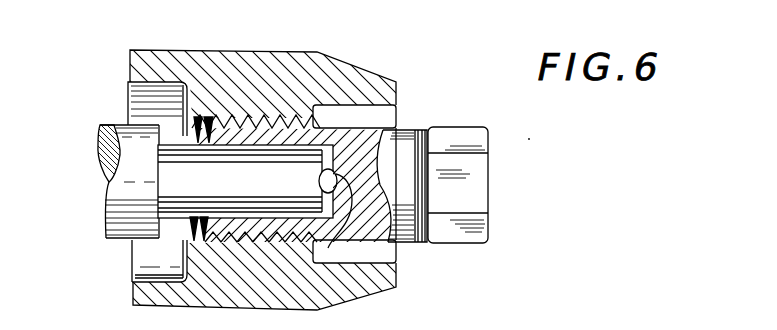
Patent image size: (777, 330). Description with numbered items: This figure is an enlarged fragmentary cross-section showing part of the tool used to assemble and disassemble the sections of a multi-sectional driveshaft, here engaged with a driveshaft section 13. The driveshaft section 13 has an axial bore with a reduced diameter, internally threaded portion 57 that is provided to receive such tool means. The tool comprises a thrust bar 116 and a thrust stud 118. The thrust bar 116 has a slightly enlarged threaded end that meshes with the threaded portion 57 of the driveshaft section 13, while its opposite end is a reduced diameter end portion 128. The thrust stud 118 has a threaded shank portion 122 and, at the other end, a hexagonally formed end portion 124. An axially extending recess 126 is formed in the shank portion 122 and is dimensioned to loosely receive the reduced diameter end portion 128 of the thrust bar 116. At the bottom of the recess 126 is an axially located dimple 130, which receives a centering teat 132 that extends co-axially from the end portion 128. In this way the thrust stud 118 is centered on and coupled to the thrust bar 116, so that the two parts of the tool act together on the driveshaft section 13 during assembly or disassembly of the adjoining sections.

The driveshaft section 13 is at (343, 62).
The threaded portion 57 is at (202, 118).
The thrust bar 116 is at (120, 161).
The thrust stud 118 is at (404, 130).
The threaded shank portion 122 is at (257, 123).
The hexagonally formed end portion 124 is at (483, 187).
The recess 126 is at (283, 220).
The reduced diameter end portion 128 is at (209, 240).
The dimple 130 is at (358, 223).
The centering teat 132 is at (323, 182).